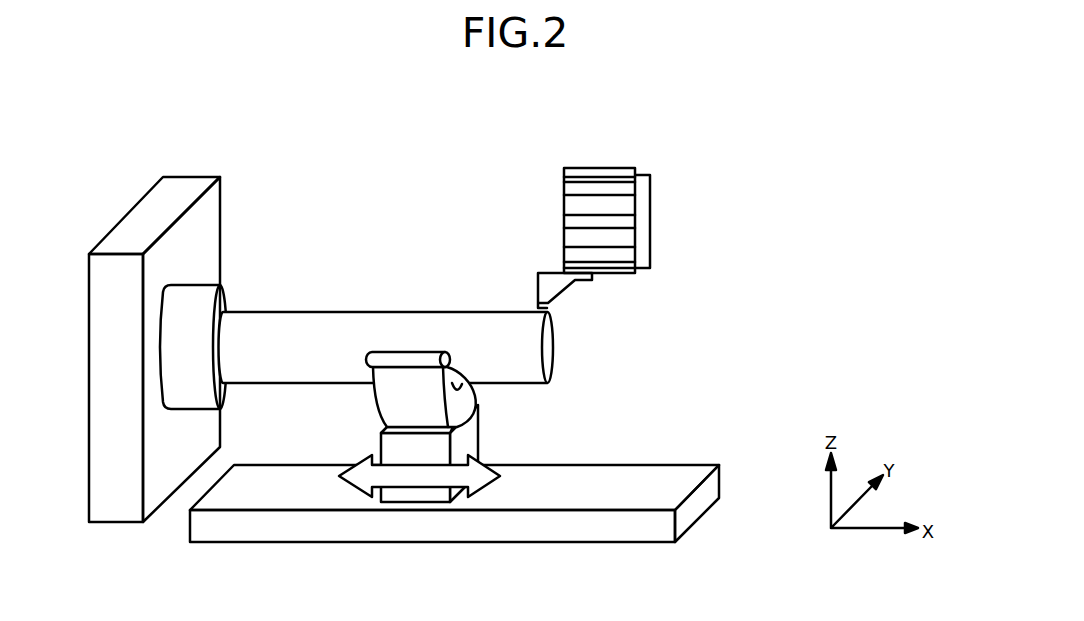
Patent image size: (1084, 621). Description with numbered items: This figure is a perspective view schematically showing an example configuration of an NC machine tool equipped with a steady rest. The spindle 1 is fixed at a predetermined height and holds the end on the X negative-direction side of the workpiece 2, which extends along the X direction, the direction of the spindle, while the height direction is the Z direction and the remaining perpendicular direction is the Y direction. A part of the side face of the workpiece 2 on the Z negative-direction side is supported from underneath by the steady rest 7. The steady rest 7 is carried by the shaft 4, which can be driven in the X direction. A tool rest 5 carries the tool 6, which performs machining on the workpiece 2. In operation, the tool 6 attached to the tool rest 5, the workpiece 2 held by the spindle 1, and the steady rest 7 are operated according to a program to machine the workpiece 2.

The spindle 1 is at (195, 298).
The workpiece 2 is at (297, 330).
The shaft 4 is at (480, 478).
The tool rest 5 is at (646, 178).
The tool 6 is at (545, 310).
The steady rest 7 is at (419, 378).